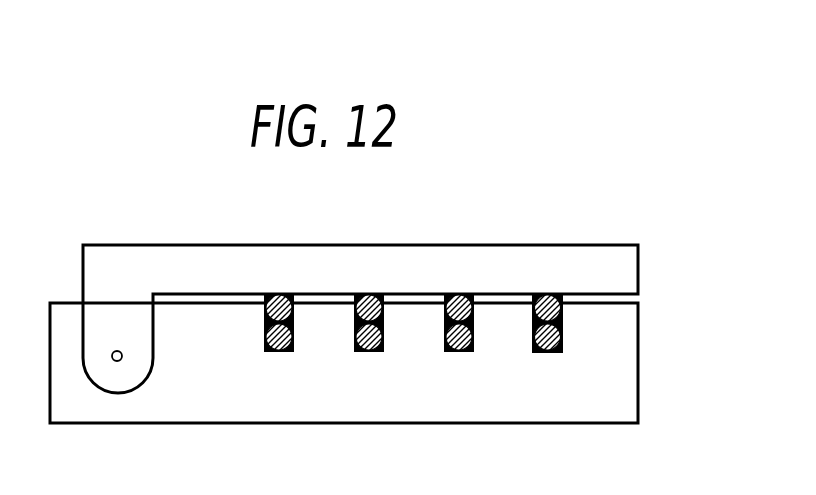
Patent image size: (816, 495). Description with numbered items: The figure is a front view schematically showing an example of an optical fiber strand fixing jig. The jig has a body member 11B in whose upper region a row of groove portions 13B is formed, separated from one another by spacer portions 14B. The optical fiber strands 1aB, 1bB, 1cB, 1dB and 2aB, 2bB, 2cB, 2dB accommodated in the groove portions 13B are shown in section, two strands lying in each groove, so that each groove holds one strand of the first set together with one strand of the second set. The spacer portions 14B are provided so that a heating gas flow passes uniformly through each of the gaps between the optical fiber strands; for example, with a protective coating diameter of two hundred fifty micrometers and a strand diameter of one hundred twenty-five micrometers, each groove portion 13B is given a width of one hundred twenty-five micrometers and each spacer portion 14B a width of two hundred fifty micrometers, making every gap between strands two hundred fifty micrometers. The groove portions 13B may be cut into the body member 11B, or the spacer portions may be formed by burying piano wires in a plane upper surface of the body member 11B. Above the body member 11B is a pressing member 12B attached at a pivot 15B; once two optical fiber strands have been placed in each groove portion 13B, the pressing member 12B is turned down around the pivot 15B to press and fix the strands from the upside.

The body member 11B is at (183, 402).
The pressing member 12B is at (168, 252).
The groove portions 13B is at (575, 323).
The spacer portions 14B is at (495, 329).
The pivot 15B is at (117, 361).
The optical fiber strand 1aB is at (288, 331).
The optical fiber strand 1bB is at (369, 331).
The optical fiber strand 1cB is at (460, 331).
The optical fiber strand 1dB is at (574, 331).
The optical fiber strand 2aB is at (278, 351).
The optical fiber strand 2bB is at (368, 351).
The optical fiber strand 2cB is at (460, 351).
The optical fiber strand 2dB is at (547, 353).